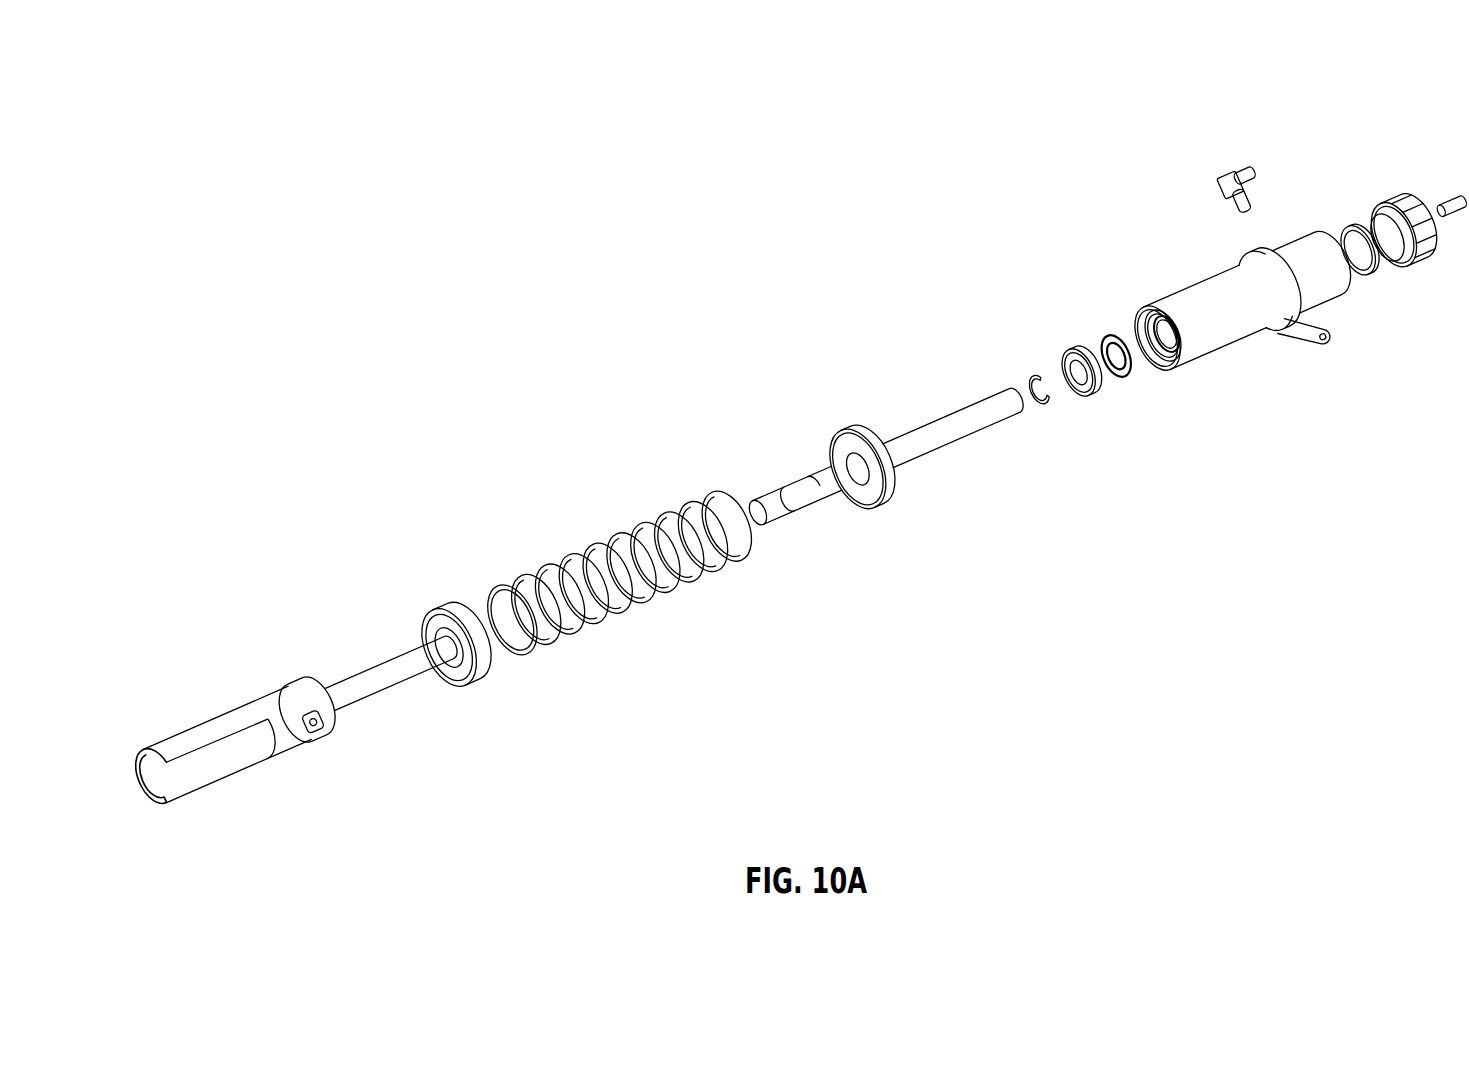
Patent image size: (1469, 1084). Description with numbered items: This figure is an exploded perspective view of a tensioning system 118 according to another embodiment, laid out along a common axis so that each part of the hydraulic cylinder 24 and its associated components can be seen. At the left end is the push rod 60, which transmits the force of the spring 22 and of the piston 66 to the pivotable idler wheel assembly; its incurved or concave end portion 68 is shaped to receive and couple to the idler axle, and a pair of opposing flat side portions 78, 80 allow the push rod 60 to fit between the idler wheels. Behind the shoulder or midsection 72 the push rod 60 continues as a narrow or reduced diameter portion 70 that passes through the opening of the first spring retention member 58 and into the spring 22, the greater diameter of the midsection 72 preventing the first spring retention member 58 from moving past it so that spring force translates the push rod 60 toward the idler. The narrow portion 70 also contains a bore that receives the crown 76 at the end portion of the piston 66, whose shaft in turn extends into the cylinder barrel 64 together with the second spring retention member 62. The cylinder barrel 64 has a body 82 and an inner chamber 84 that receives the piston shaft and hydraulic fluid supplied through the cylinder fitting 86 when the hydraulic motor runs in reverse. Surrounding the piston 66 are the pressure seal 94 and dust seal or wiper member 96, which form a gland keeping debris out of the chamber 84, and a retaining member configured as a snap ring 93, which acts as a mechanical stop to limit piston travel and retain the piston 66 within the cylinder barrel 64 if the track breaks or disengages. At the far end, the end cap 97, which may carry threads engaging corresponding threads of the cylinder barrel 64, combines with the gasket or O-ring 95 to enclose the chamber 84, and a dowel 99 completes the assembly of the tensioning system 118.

The tensioning system 118 is at (640, 386).
The spring 22 is at (600, 540).
The hydraulic cylinder 24 is at (1224, 352).
The first spring retention member 58 is at (450, 607).
The push rod 60 is at (285, 708).
The second spring retention member 62 is at (857, 431).
The cylinder barrel 64 is at (1182, 287).
The piston 66 is at (957, 418).
The concave end portion 68 is at (167, 780).
The narrow portion 70 is at (357, 694).
The midsection 72 is at (317, 687).
The crown 76 is at (778, 497).
The flat side portion 78 is at (210, 771).
The flat side portion 80 is at (203, 720).
The body 82 is at (1230, 287).
The inner chamber 84 is at (1125, 325).
The cylinder fitting 86 is at (1220, 167).
The snap ring 93 is at (1037, 407).
The pressure seal 94 is at (1125, 372).
The O-ring 95 is at (1362, 277).
The dust seal 96 is at (1080, 352).
The end cap 97 is at (1400, 193).
The dowel 99 is at (1450, 200).